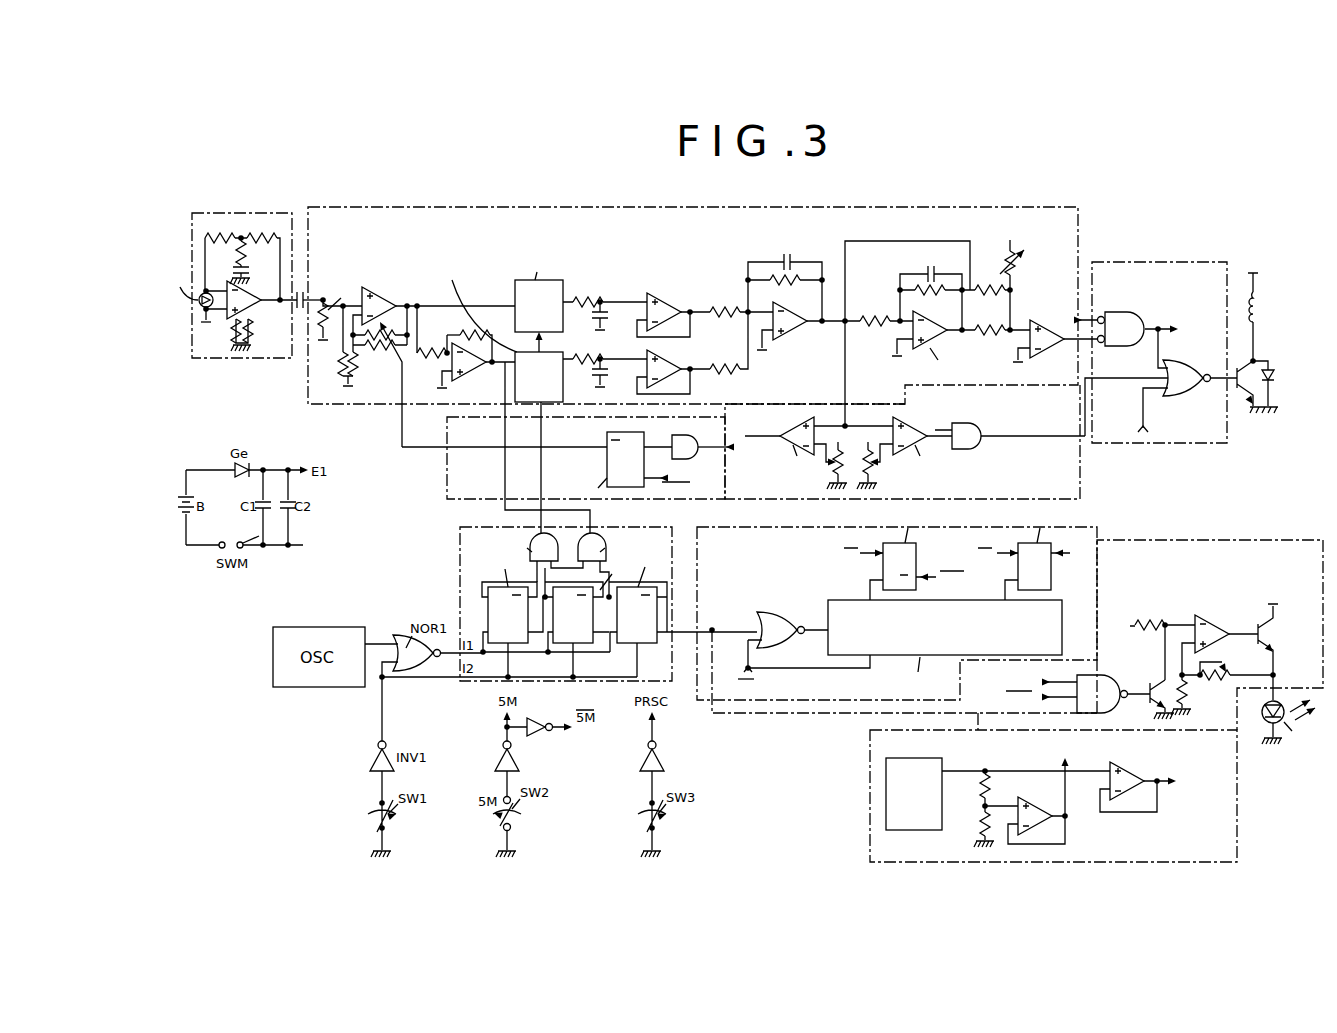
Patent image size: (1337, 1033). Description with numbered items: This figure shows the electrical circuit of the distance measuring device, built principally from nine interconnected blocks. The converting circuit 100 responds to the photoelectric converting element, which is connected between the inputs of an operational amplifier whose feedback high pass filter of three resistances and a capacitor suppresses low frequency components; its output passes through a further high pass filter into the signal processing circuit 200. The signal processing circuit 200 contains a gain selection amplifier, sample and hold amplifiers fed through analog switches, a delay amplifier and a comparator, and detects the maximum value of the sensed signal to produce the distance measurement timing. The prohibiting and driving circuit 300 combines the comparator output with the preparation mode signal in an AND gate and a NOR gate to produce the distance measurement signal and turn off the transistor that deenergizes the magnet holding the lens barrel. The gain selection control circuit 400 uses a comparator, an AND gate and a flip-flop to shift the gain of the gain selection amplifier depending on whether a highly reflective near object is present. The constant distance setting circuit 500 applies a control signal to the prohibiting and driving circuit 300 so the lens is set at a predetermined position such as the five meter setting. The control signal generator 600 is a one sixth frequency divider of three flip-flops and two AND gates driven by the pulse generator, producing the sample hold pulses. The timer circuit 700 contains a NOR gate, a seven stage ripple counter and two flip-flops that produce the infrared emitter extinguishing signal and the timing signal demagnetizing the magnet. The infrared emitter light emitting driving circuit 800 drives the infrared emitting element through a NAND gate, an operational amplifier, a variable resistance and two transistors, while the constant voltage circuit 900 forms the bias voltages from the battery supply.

The converting circuit 100 is at (243, 359).
The signal processing circuit 200 is at (490, 196).
The prohibiting and driving circuit 300 is at (1157, 262).
The gain selection control circuit 400 is at (447, 488).
The constant distance setting circuit 500 is at (1080, 478).
The generator of a control signal 600 is at (460, 545).
The timer circuit 700 is at (813, 701).
The IRED element light emitting driving circuit 800 is at (1193, 540).
The constant voltage circuit 900 is at (870, 793).